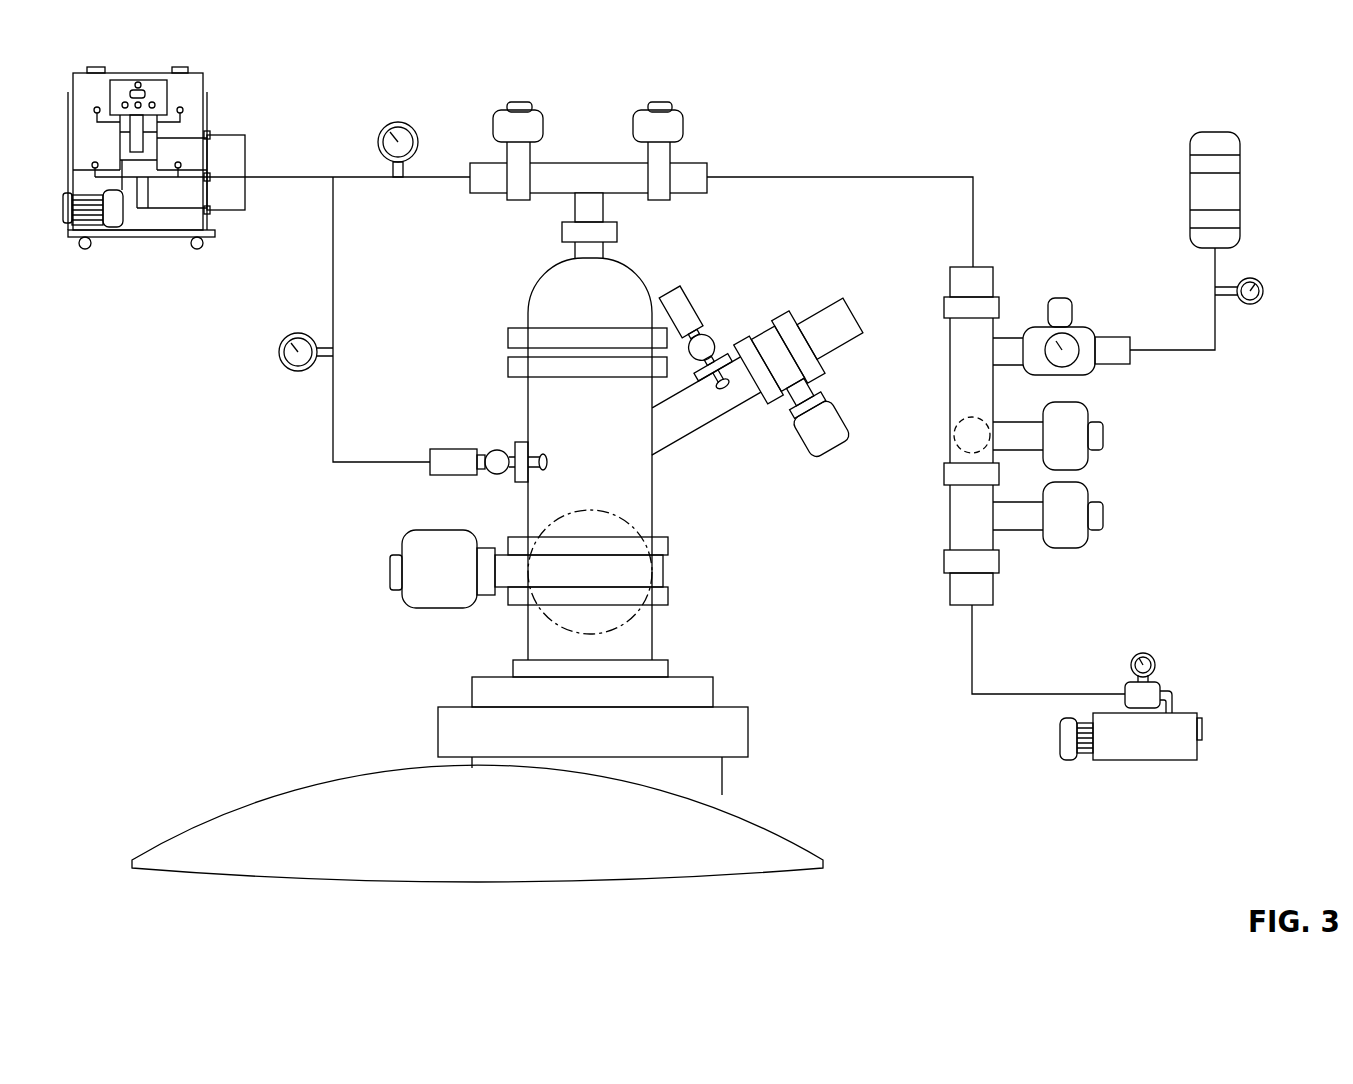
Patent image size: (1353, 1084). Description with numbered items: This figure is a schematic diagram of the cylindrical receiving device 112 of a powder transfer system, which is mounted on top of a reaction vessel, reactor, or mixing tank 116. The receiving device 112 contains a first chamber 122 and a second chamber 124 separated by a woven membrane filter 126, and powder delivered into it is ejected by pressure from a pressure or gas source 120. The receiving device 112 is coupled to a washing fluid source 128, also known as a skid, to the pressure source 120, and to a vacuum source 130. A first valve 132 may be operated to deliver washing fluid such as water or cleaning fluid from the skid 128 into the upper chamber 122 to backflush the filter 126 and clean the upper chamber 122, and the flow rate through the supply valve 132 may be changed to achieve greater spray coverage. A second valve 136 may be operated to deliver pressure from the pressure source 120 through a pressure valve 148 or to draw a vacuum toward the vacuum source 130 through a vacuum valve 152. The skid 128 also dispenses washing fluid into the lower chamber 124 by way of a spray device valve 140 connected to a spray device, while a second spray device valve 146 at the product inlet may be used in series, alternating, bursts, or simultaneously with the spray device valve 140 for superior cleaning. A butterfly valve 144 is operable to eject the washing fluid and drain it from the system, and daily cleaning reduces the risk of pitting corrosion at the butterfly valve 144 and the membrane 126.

The cylindrical receiving device 112 is at (738, 222).
The reaction vessel, reactor, or mixing tank 116 is at (748, 825).
The pressure or gas source 120 is at (1203, 195).
The first chamber 122 is at (527, 454).
The second chamber 124 is at (555, 428).
The membrane filter 126 is at (622, 355).
The washing fluid source 128 is at (160, 223).
The vacuum source 130 is at (1146, 748).
The first valve 132 is at (513, 128).
The second valve 136 is at (680, 127).
The spray device valve 140 is at (455, 462).
The butterfly valve 144 is at (604, 612).
The second spray device valve 146 is at (695, 302).
The pressure valve 148 is at (1077, 340).
The vacuum valve 152 is at (672, 430).